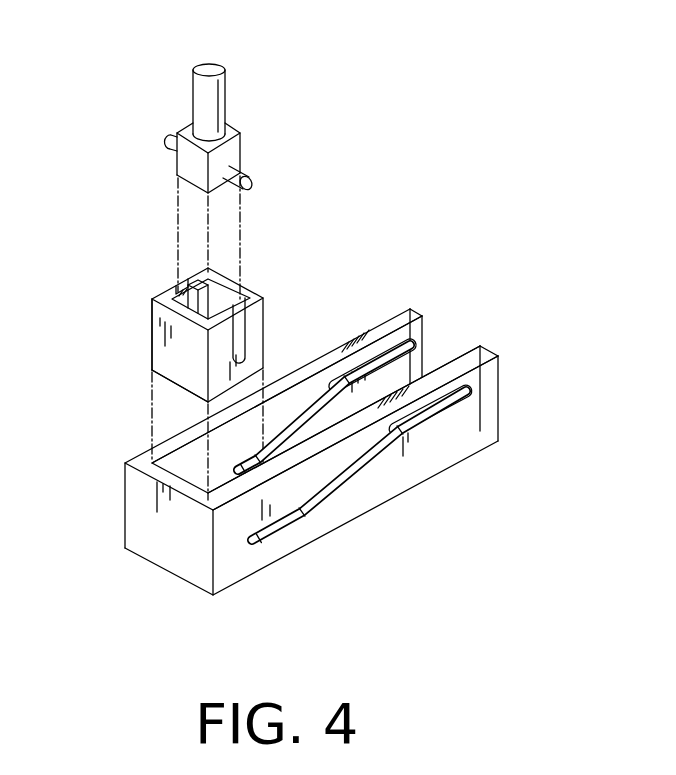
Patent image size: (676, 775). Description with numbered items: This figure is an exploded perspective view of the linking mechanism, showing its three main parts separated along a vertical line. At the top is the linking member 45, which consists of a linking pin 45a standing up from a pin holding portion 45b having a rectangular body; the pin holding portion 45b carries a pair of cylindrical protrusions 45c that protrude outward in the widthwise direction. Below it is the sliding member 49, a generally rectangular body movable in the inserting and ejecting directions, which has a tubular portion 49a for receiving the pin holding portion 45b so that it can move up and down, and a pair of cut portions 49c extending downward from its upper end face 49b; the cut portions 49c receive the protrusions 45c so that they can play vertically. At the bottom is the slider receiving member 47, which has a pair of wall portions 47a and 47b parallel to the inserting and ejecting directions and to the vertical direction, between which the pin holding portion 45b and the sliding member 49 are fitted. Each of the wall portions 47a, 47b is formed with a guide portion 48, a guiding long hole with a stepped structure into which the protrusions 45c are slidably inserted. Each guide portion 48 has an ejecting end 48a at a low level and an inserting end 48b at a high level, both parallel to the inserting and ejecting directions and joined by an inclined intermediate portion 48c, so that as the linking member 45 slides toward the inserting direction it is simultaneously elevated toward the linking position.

The linking member 45 is at (255, 94).
The linking pin 45a is at (209, 71).
The pin holding portion 45b is at (182, 130).
The cylindrical protrusions 45c is at (248, 165).
The slider receiving member 47 is at (244, 580).
The wall portion 47a is at (415, 330).
The wall portion 47b is at (483, 415).
The guide portion 48 is at (322, 398).
The ejecting end 48a is at (238, 474).
The inserting end 48b is at (392, 340).
The inclined intermediate portion 48c is at (354, 470).
The sliding member 49 is at (139, 323).
The tubular portion 49a is at (153, 352).
The upper end face 49b is at (250, 292).
The cut portions 49c is at (237, 338).